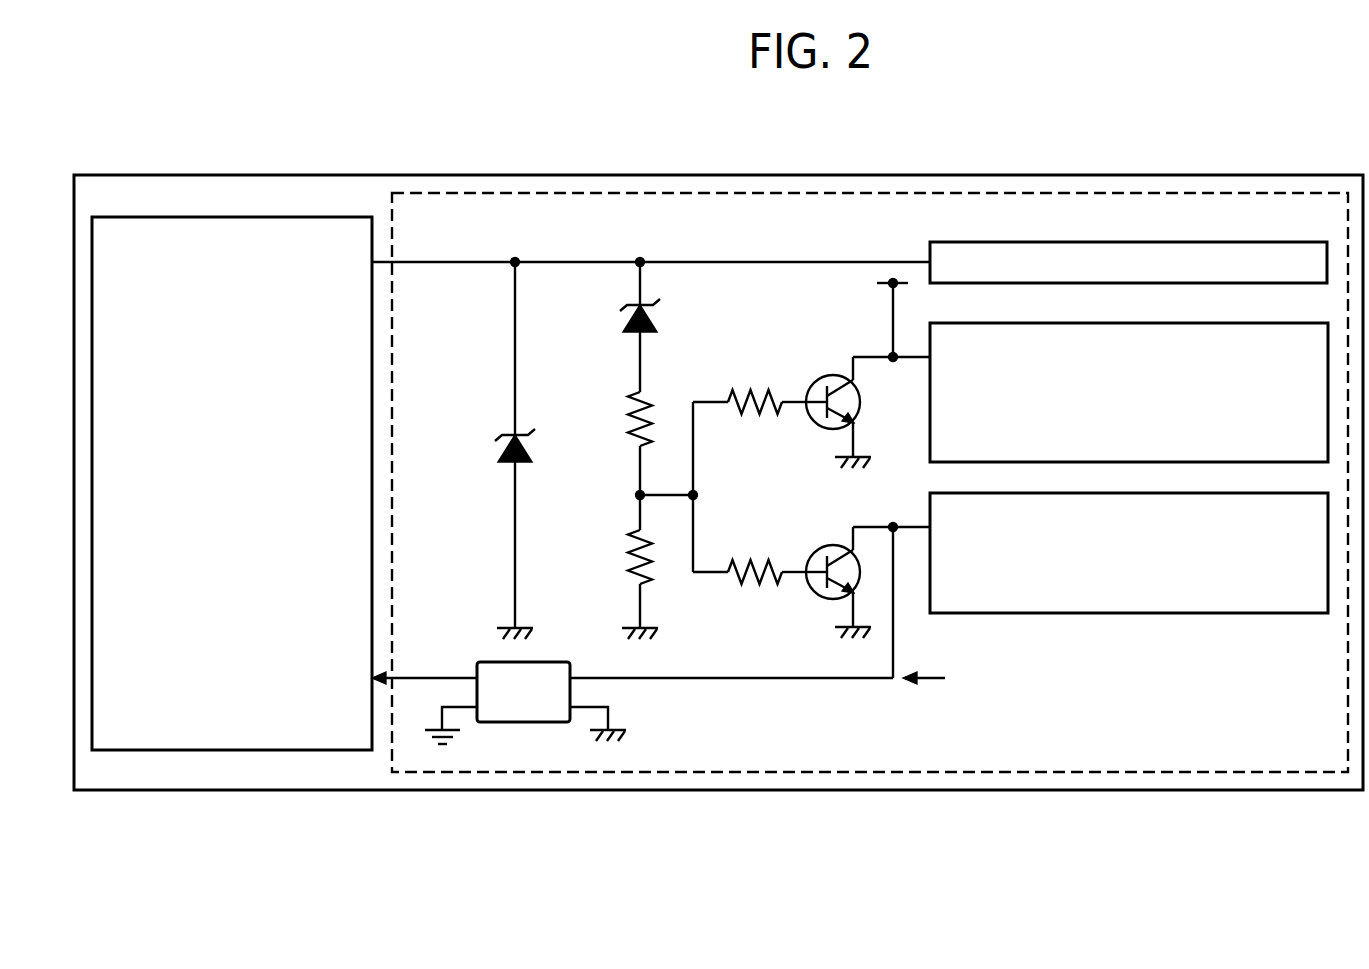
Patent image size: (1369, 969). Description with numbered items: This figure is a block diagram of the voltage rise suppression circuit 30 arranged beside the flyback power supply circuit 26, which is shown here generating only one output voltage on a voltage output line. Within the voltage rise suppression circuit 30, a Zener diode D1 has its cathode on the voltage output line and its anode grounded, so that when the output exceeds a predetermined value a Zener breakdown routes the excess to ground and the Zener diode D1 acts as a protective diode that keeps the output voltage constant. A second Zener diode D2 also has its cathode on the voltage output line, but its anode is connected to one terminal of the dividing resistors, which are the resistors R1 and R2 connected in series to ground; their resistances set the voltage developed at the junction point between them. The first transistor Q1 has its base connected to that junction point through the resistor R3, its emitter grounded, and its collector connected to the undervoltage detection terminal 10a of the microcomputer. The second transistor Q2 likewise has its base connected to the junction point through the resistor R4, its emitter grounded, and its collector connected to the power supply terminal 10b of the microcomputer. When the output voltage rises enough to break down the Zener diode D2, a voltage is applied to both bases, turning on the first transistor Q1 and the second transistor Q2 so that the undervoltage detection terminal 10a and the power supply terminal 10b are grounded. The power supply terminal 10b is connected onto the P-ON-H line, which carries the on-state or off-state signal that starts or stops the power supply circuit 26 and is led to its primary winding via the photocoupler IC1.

The power supply circuit 26 is at (212, 217).
The voltage rise suppression circuit 30 is at (720, 195).
The undervoltage detection terminal 10a is at (995, 323).
The power supply terminal 10b is at (1150, 613).
The Zener diode D1 is at (496, 450).
The Zener diode D2 is at (624, 327).
The resistor R1 is at (622, 461).
The resistor R2 is at (625, 584).
The resistor R3 is at (749, 387).
The resistor R4 is at (749, 559).
The first transistor Q1 is at (838, 398).
The second transistor Q2 is at (838, 569).
The photocoupler IC1 is at (499, 695).